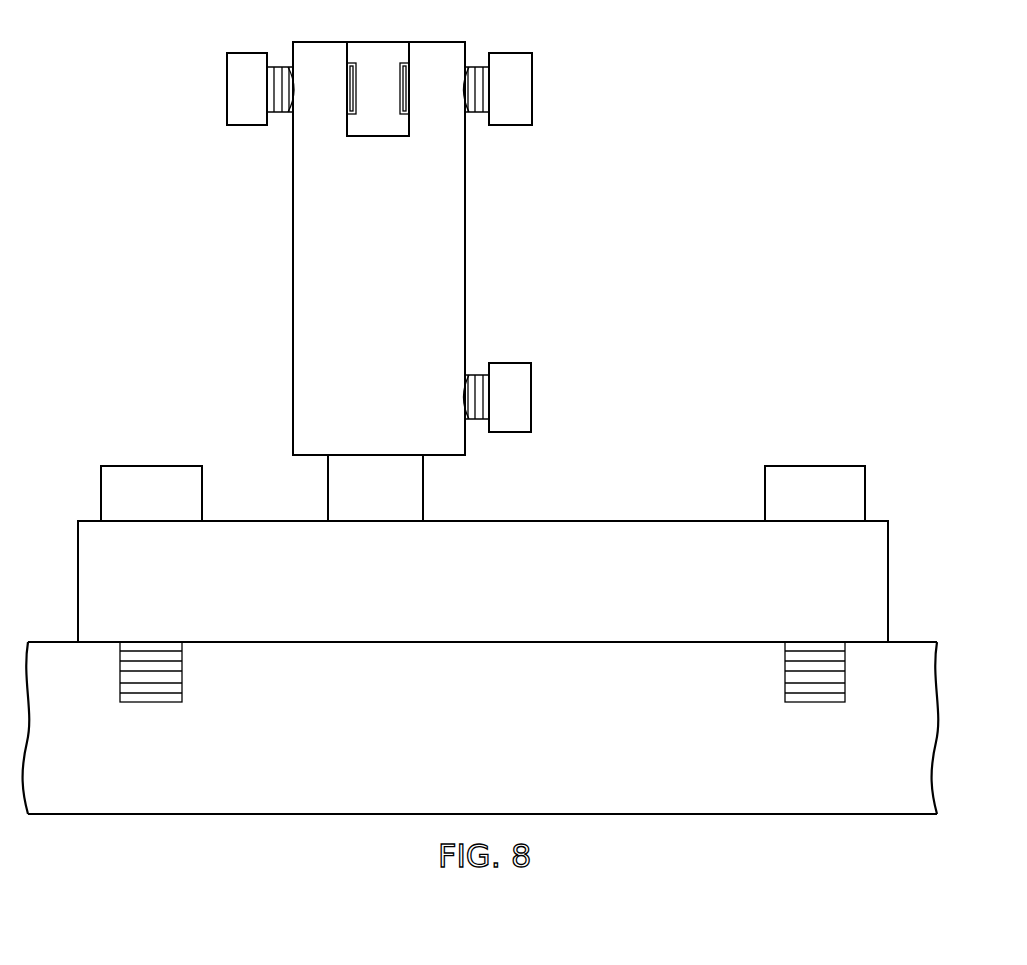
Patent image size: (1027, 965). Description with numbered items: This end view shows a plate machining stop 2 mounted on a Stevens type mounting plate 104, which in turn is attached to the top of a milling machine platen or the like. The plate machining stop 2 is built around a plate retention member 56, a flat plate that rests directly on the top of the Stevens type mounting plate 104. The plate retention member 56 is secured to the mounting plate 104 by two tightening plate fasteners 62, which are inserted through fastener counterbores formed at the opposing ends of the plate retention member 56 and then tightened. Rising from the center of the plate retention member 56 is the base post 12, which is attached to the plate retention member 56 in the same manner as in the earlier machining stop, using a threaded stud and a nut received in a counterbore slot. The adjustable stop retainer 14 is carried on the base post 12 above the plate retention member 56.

The plate machining stop 2 is at (483, 342).
The adjustable stop retainer 14 is at (464, 263).
The base post 12 is at (403, 492).
The plate retention member 56 is at (708, 520).
The tightening plate fastener 62 is at (147, 466).
The Stevens type mounting plate 104 is at (238, 814).